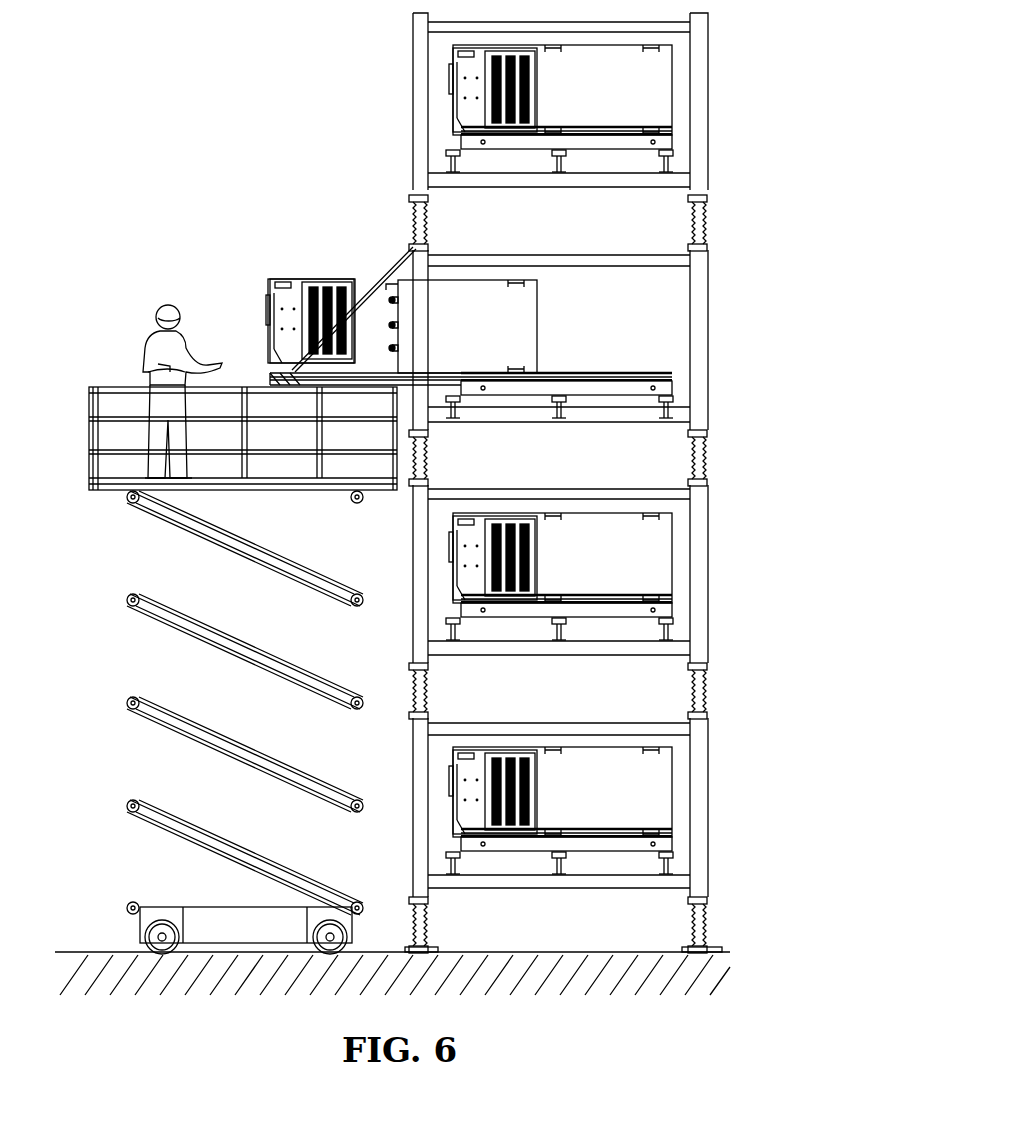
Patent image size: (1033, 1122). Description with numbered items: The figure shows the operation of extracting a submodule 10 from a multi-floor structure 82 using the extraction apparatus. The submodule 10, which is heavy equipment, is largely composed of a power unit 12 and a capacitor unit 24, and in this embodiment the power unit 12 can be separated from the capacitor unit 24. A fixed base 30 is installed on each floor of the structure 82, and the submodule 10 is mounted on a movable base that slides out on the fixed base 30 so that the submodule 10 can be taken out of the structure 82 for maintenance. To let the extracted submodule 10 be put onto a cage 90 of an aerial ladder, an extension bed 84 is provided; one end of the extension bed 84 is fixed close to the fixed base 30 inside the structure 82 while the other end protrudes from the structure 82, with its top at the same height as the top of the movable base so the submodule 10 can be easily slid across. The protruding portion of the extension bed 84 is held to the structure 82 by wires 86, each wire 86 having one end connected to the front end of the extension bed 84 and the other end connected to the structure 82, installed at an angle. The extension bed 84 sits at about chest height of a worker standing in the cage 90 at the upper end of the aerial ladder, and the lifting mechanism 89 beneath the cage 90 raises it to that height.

The structure 82 is at (412, 52).
The submodule 10 is at (446, 103).
The power unit 12 is at (285, 279).
The wires 86 is at (366, 283).
The capacitor unit 24 is at (490, 280).
The fixed base 30 is at (605, 373).
The cage 90 is at (118, 386).
The extension bed 84 is at (266, 376).
The scissor lift 89 is at (122, 606).